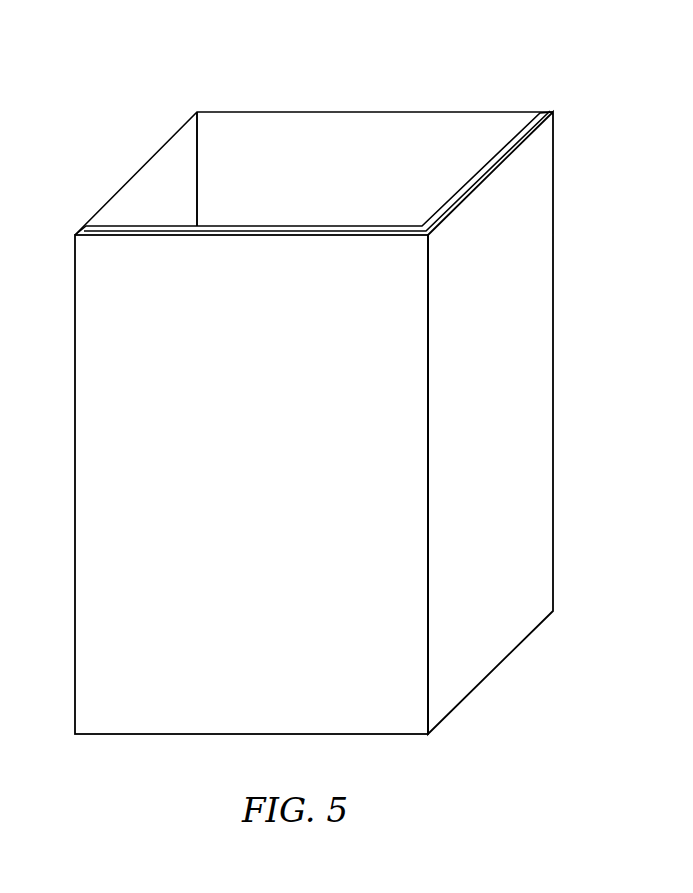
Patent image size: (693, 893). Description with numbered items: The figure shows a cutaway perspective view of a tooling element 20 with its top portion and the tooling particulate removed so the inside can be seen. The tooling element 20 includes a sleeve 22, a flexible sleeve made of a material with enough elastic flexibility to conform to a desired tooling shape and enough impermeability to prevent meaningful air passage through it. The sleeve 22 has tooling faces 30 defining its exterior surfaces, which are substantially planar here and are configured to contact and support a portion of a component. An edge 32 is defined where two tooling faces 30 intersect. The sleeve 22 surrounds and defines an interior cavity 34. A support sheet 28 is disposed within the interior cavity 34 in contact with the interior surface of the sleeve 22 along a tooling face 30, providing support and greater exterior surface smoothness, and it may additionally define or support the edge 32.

The tooling element 20 is at (374, 173).
The sleeve 22 is at (516, 389).
The support sheet 28 is at (382, 230).
The tooling face 30 is at (115, 585).
The edge 32 is at (428, 444).
The interior cavity 34 is at (300, 158).